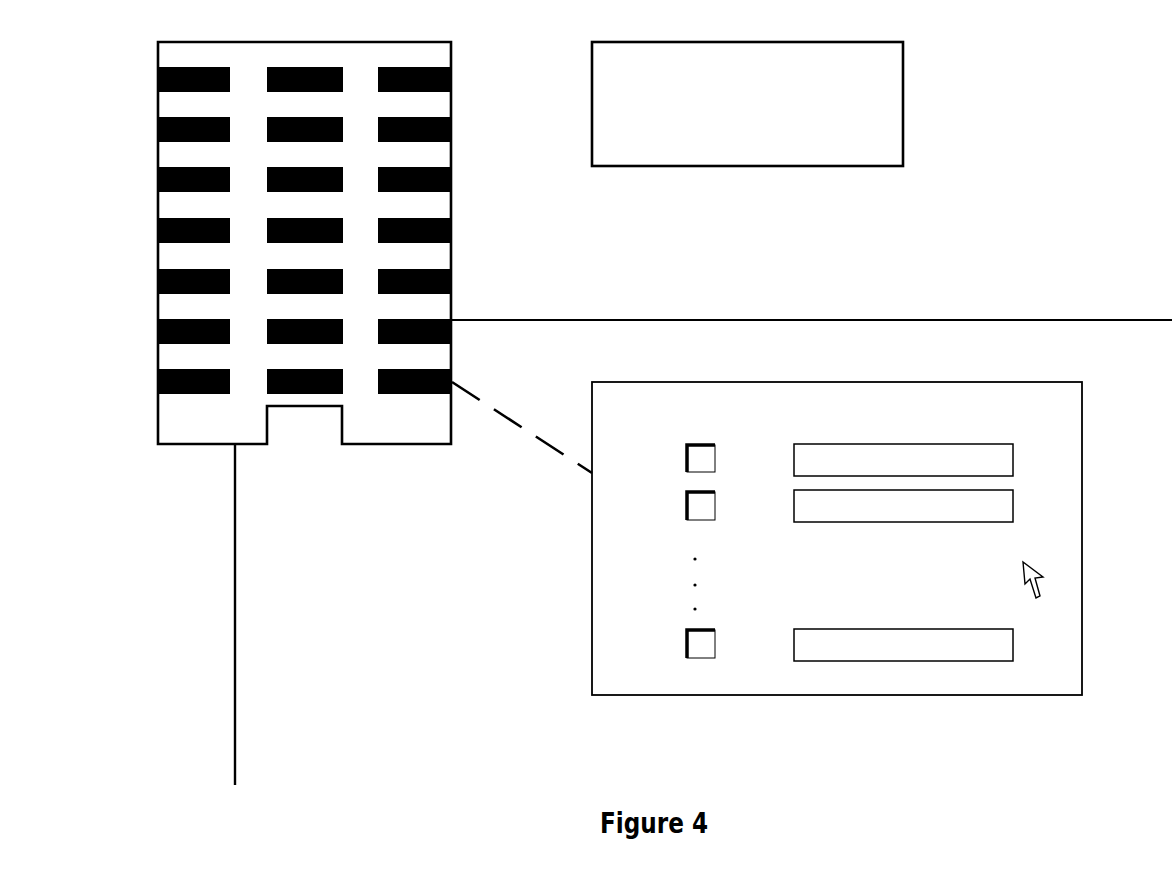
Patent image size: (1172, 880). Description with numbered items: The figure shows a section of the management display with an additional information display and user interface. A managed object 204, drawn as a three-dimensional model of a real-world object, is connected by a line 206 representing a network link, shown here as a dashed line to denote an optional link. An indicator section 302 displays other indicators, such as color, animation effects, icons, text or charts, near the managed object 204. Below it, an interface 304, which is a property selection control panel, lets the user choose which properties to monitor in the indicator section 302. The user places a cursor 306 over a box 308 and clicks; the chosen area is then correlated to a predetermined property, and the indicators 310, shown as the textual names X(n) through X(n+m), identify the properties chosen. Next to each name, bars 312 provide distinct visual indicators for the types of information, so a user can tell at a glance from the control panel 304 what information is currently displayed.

The managed object 204 is at (390, 444).
The line 206 is at (497, 378).
The indicator section 302 is at (808, 166).
The interface 304 is at (592, 660).
The cursor 306 is at (1032, 567).
The box 308 is at (683, 467).
The indicators 310 is at (740, 530).
The bars 312 is at (933, 447).